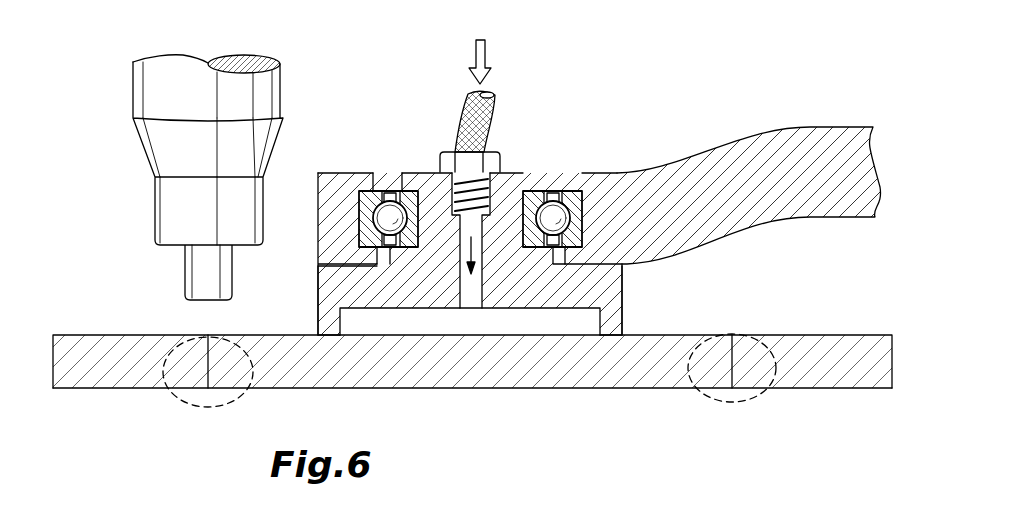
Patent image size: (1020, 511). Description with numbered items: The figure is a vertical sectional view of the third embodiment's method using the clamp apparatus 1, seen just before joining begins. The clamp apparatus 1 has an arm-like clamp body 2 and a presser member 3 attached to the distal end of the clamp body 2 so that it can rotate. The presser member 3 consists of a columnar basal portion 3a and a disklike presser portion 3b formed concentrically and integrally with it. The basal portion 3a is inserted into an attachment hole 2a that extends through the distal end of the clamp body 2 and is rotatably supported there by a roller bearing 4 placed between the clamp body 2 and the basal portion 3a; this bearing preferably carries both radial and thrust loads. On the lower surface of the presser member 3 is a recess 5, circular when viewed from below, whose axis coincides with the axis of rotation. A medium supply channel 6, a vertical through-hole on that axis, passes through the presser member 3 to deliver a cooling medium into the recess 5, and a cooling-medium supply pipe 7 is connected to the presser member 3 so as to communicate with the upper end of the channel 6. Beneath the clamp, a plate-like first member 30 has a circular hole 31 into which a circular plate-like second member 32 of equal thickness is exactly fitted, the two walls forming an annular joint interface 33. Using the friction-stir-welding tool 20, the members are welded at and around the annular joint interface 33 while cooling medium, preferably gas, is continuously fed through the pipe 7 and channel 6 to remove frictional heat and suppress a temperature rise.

The clamp apparatus 1 is at (648, 158).
The clamp body 2 is at (827, 137).
The attachment hole 2a is at (390, 191).
The presser member 3 is at (608, 278).
The basal portion 3a is at (513, 172).
The presser portion 3b is at (327, 287).
The roller bearing 4 is at (373, 191).
The recess 5 is at (358, 316).
The medium supply channel 6 is at (473, 298).
The cooling-medium supply pipe 7 is at (465, 105).
The friction-stir-welding tool 20 is at (127, 183).
The first member 30 is at (839, 333).
The circular hole 31 is at (728, 338).
The second member 32 is at (567, 388).
The annular joint interface 33 is at (205, 362).